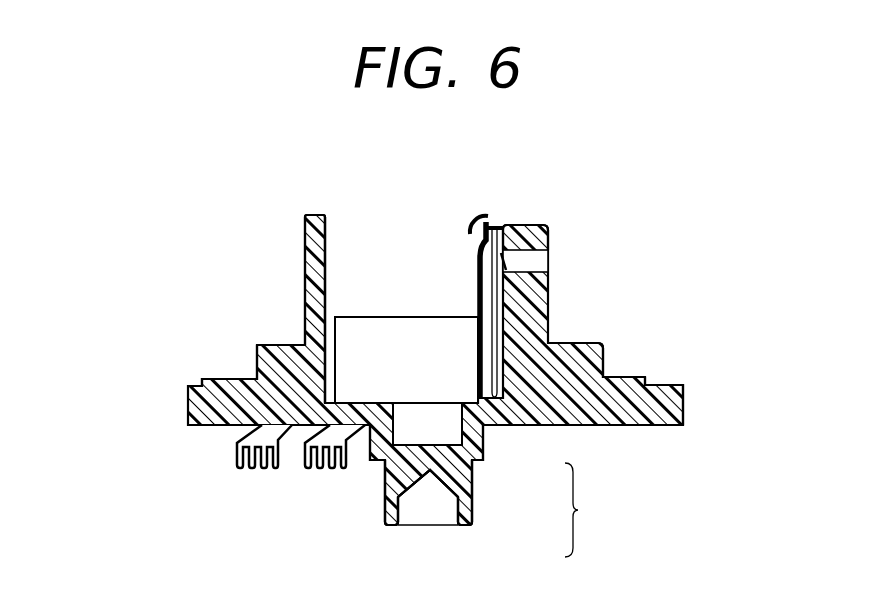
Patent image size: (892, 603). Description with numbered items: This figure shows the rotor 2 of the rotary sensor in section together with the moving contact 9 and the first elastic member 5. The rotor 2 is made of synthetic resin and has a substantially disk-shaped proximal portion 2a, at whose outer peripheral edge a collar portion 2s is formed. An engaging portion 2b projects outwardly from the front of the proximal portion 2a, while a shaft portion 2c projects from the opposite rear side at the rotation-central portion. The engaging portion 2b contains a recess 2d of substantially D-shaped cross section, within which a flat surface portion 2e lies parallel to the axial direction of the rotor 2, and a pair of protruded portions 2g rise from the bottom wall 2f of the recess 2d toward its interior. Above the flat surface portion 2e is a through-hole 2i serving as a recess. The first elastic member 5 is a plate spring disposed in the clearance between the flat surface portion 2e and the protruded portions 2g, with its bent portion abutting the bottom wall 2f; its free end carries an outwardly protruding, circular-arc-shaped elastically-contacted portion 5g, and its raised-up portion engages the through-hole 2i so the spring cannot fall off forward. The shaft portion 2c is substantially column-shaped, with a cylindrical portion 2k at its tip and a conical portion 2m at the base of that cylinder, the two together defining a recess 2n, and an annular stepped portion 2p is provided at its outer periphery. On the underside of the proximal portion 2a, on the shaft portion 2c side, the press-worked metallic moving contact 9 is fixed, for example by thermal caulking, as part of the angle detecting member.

The rotor 2 is at (646, 292).
The proximal portion 2a is at (576, 367).
The engaging portion 2b is at (315, 273).
The shaft portion 2c is at (499, 508).
The recess 2d is at (378, 250).
The flat surface portion 2e is at (507, 306).
The bottom wall 2f is at (360, 403).
The protruded portions 2g is at (408, 330).
The through-hole 2i is at (552, 242).
The cylindrical portion 2k is at (473, 512).
The conical portion 2m is at (447, 473).
The recess 2n is at (425, 496).
The annular stepped portion 2p is at (478, 464).
The collar portion 2s is at (668, 413).
The first elastic member 5 is at (468, 270).
The elastically-contacted portion 5g is at (471, 230).
The moving contact 9 is at (236, 449).